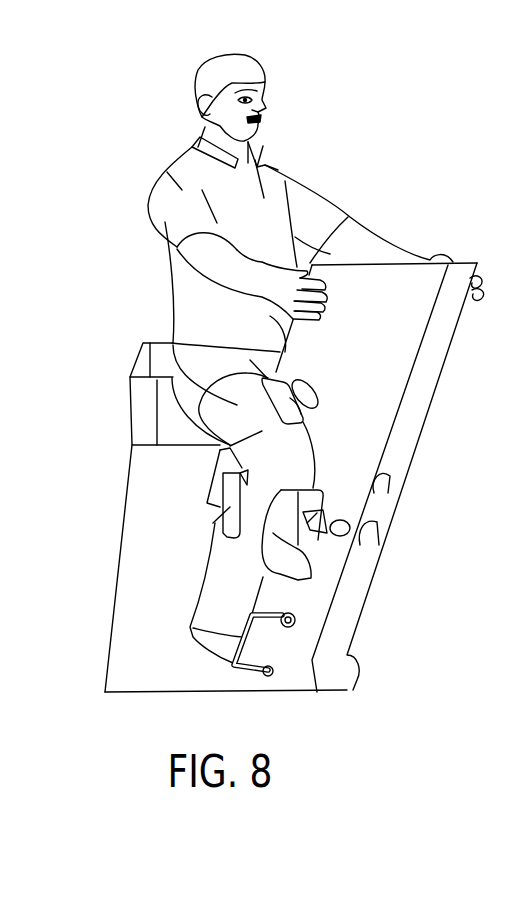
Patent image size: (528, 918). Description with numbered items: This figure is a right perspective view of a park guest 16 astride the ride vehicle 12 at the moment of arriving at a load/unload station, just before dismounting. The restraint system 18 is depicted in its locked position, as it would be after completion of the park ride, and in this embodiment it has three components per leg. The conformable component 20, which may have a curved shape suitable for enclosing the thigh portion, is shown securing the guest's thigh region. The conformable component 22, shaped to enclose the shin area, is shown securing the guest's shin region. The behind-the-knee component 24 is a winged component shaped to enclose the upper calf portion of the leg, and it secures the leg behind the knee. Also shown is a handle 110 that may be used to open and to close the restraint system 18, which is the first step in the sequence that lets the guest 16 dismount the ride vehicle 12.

The ride vehicle 12 is at (394, 309).
The park guest 16 is at (167, 172).
The restraint system 18 is at (338, 442).
The conformable component 20 is at (130, 377).
The conformable component 22 is at (274, 534).
The behind-the-knee component 24 is at (213, 523).
The handle 110 is at (316, 402).